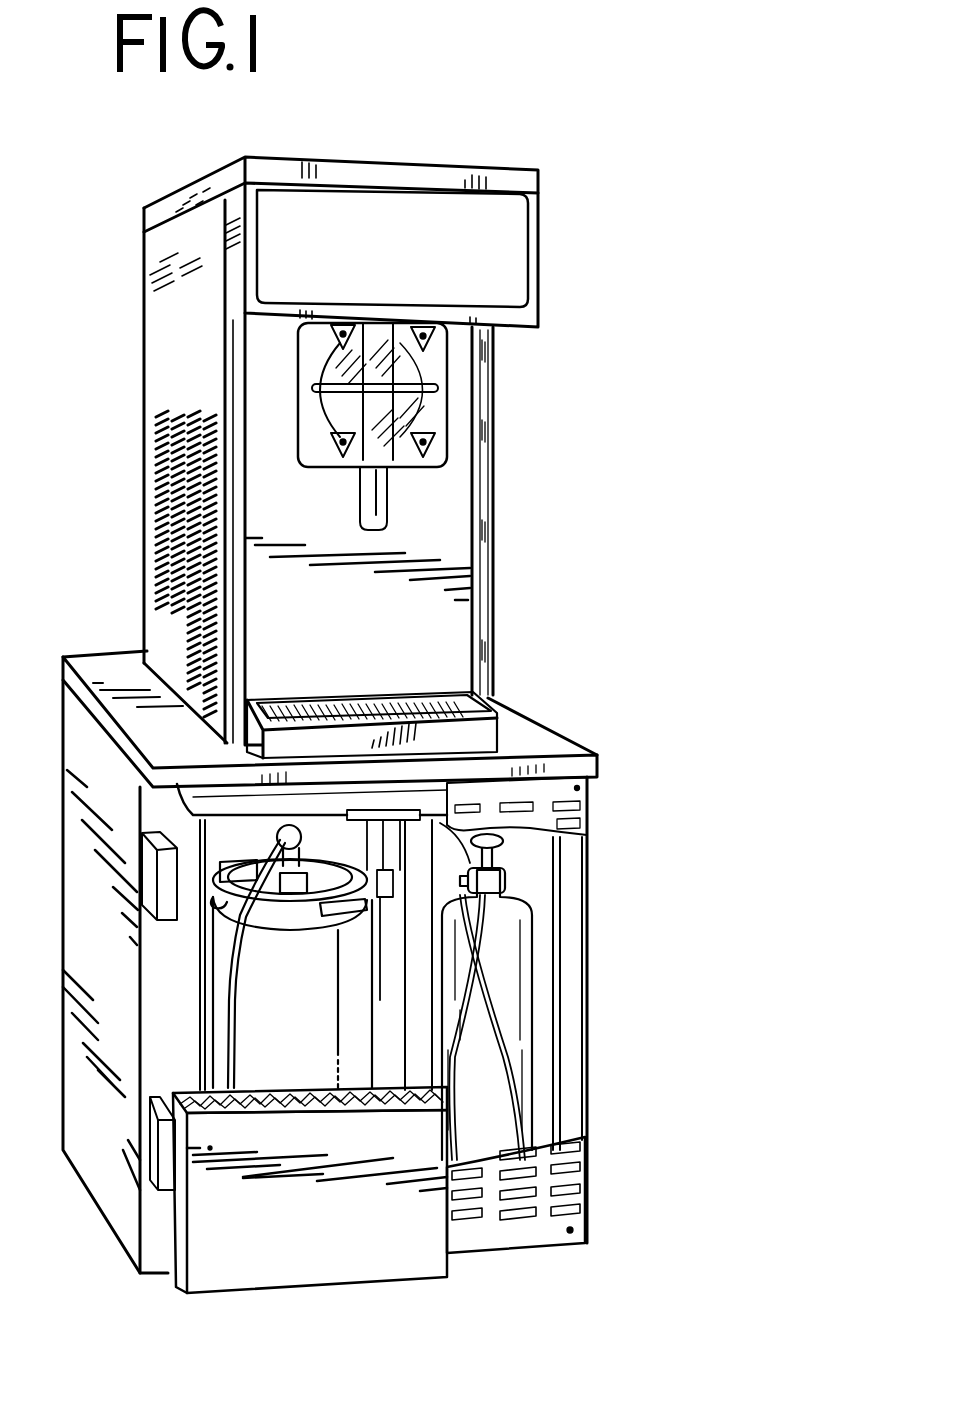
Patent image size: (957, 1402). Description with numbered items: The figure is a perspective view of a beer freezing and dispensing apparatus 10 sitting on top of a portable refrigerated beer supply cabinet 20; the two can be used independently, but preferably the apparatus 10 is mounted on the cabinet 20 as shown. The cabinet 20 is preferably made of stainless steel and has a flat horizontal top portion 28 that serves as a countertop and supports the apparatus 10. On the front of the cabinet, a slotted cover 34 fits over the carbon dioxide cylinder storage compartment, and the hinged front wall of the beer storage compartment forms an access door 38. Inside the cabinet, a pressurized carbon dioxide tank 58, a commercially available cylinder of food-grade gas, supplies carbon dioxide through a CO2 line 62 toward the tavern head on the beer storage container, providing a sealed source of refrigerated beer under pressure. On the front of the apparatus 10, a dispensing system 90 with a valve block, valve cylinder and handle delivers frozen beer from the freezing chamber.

The beer freezing and dispensing apparatus 10 is at (304, 457).
The portable refrigerated beer supply cabinet 20 is at (345, 951).
The flat horizontal top portion 28 is at (547, 740).
The slotted cover 34 is at (532, 1225).
The access door 38 is at (395, 1258).
The pressurized carbon dioxide tank 58 is at (507, 998).
The CO2 line 62 is at (520, 1057).
The dispensing system 90 is at (447, 423).